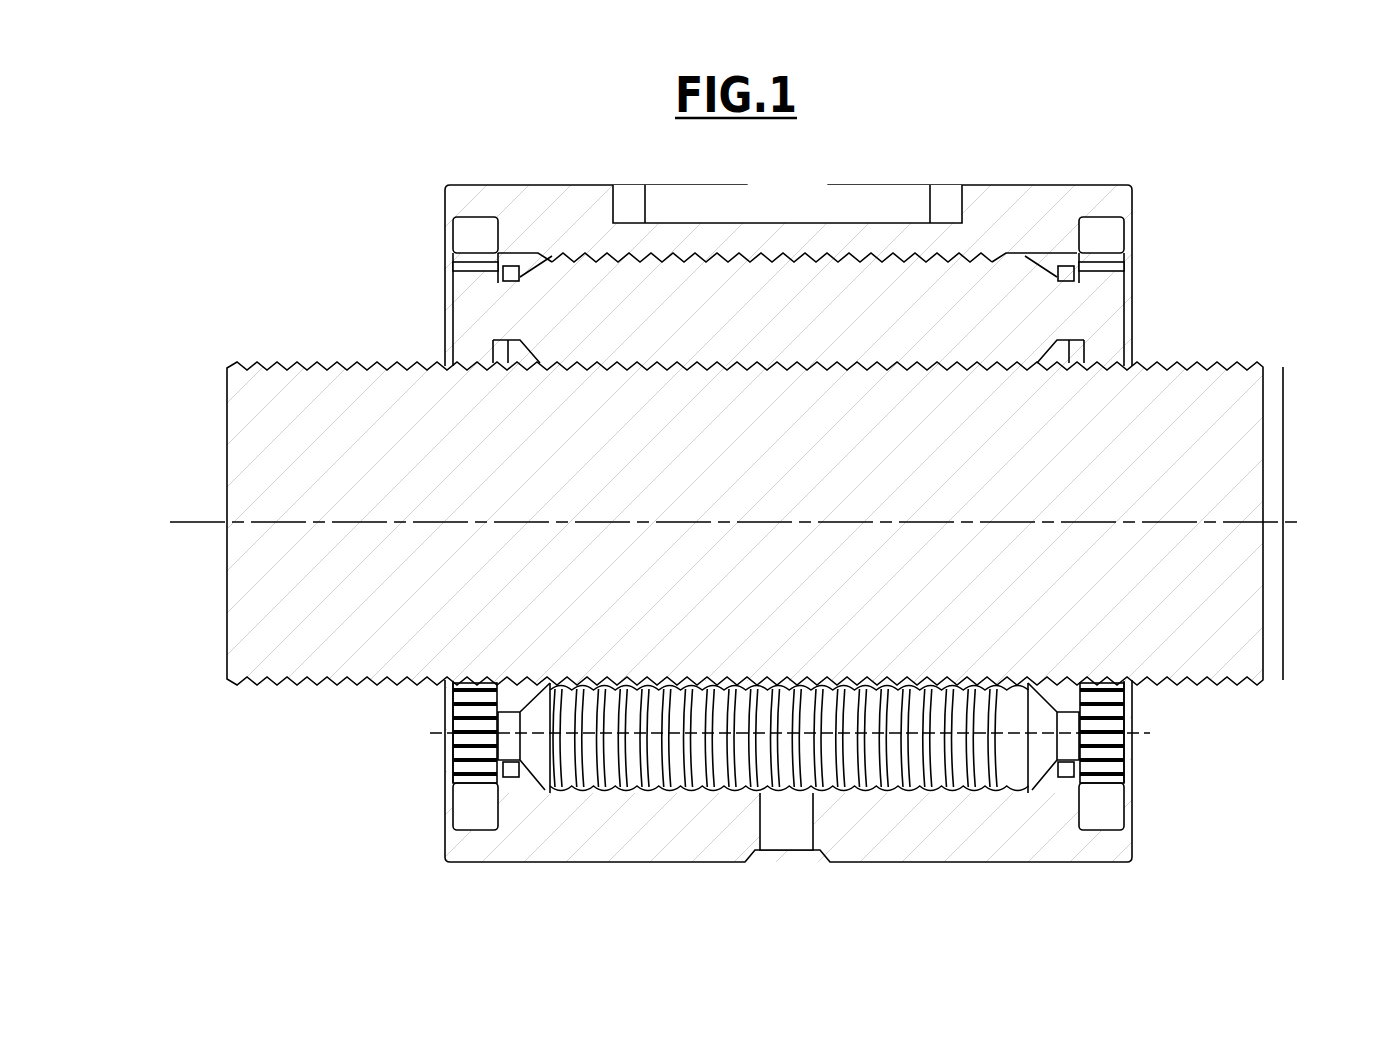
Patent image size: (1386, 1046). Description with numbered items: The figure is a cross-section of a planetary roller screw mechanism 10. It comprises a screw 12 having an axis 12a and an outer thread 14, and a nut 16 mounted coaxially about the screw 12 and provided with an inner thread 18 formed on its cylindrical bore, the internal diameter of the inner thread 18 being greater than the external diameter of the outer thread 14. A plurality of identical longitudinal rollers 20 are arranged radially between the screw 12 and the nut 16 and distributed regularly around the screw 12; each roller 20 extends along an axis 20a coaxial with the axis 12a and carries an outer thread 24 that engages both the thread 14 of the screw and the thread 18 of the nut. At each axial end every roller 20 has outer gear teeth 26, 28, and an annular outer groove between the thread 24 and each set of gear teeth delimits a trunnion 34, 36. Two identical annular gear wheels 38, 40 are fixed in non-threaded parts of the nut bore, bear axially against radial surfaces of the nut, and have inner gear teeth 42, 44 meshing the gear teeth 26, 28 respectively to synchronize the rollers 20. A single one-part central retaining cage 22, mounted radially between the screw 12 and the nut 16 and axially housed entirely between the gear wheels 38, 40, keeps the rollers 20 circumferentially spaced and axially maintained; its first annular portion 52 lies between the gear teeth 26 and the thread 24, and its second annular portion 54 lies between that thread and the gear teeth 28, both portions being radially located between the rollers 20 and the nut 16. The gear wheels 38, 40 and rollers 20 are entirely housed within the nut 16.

The planetary roller screw mechanism 10 is at (1003, 148).
The screw 12 is at (313, 362).
The axis of the screw 12a is at (1328, 520).
The outer thread 14 is at (1208, 362).
The nut 16 is at (530, 185).
The inner thread 18 is at (975, 283).
The longitudinal rollers 20 is at (815, 290).
The axis of the roller 20a is at (1125, 745).
The central retaining cage 22 is at (528, 792).
The outer thread of the roller 24 is at (897, 795).
The outer gear teeth 26 is at (455, 758).
The outer gear teeth 28 is at (1120, 786).
The trunnion 34 is at (455, 705).
The trunnion 36 is at (1125, 718).
The annular gear wheel 38 is at (472, 235).
The annular gear wheel 40 is at (1100, 235).
The inner gear teeth 42 is at (455, 268).
The inner gear teeth 44 is at (1134, 268).
The first annular portion 52 is at (510, 778).
The second annular portion 54 is at (1063, 780).